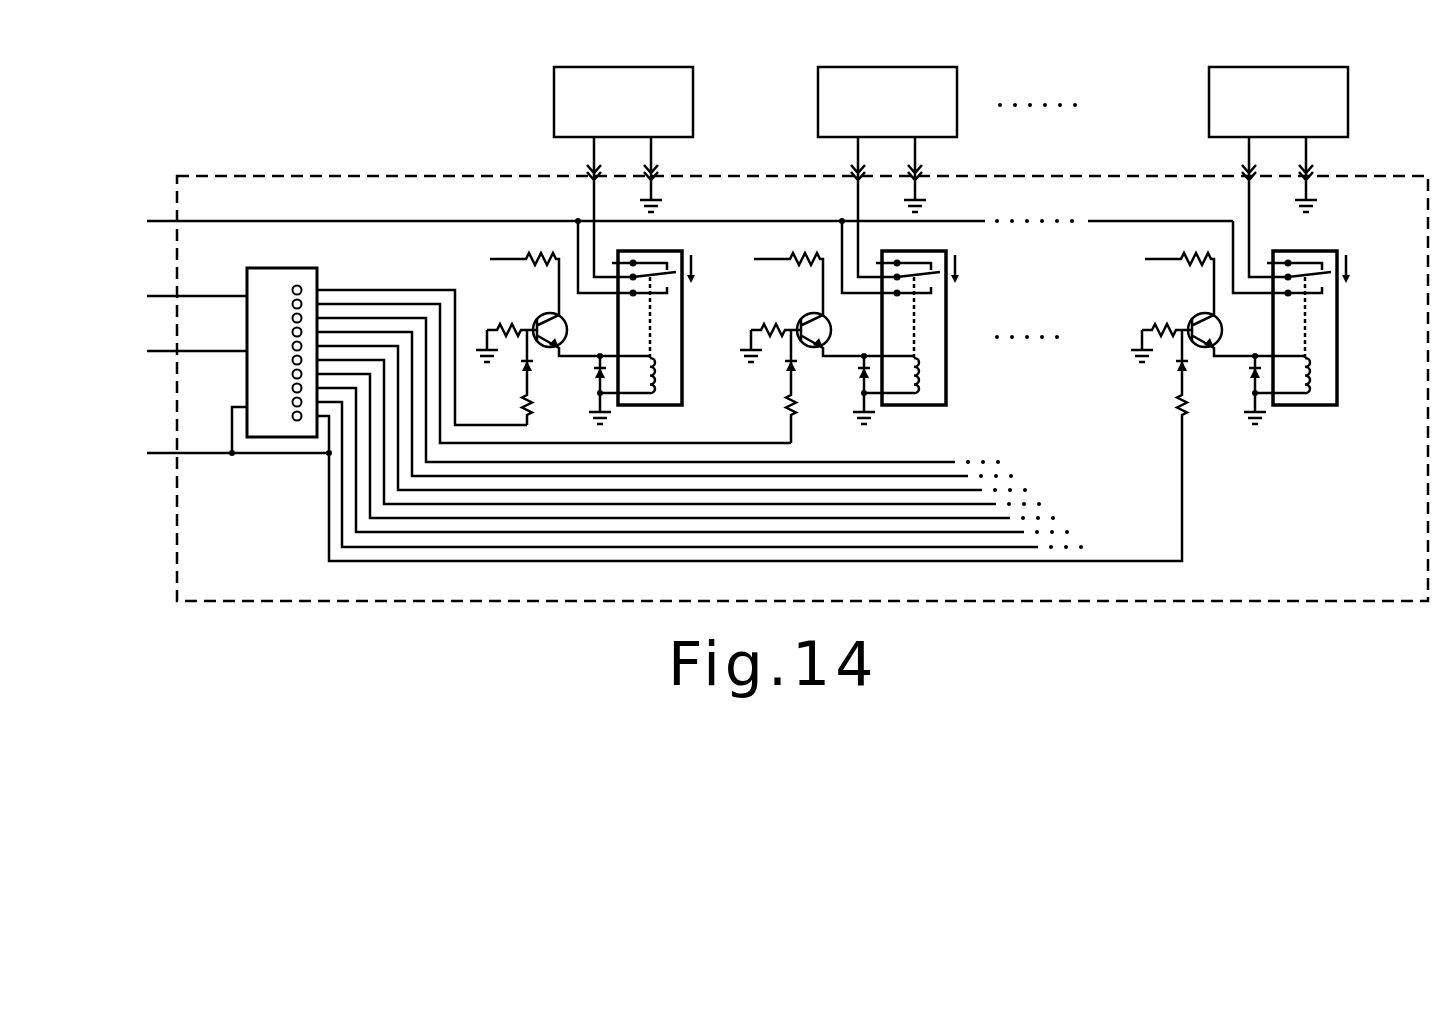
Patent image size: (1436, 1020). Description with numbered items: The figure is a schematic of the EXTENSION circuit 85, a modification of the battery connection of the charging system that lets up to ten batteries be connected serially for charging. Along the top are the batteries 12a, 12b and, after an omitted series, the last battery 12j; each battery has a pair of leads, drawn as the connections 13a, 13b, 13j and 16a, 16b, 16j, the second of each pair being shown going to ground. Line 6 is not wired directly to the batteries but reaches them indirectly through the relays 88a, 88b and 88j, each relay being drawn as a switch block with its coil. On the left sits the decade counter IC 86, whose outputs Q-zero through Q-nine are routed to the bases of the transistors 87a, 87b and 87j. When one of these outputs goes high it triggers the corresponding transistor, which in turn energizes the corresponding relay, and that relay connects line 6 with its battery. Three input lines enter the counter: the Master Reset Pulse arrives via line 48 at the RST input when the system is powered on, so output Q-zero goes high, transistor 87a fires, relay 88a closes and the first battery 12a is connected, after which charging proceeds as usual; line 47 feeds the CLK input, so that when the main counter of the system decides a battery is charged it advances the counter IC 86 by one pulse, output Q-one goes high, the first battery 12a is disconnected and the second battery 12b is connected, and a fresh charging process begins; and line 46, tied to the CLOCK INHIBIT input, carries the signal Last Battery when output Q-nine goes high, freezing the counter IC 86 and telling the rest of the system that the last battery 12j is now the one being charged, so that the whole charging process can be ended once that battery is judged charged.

The line 6 is at (151, 221).
The battery 12a is at (554, 117).
The battery 12b is at (848, 102).
The battery 12j is at (1240, 102).
The battery positive lead 13a is at (586, 166).
The battery positive lead 13b is at (831, 207).
The battery positive lead 13j is at (1219, 207).
The battery ground lead 16a is at (661, 165).
The battery ground lead 16b is at (961, 174).
The battery ground lead 16j is at (1347, 174).
The line 46 is at (150, 453).
The line 47 is at (150, 296).
The line 48 is at (150, 351).
The EXTENSION circuit 85 is at (263, 176).
The decade counter IC 86 is at (258, 268).
The transistor 87a is at (544, 312).
The transistor 87b is at (815, 346).
The transistor 87j is at (1206, 337).
The relay 88a is at (708, 389).
The relay 88b is at (926, 327).
The relay 88j is at (1313, 330).